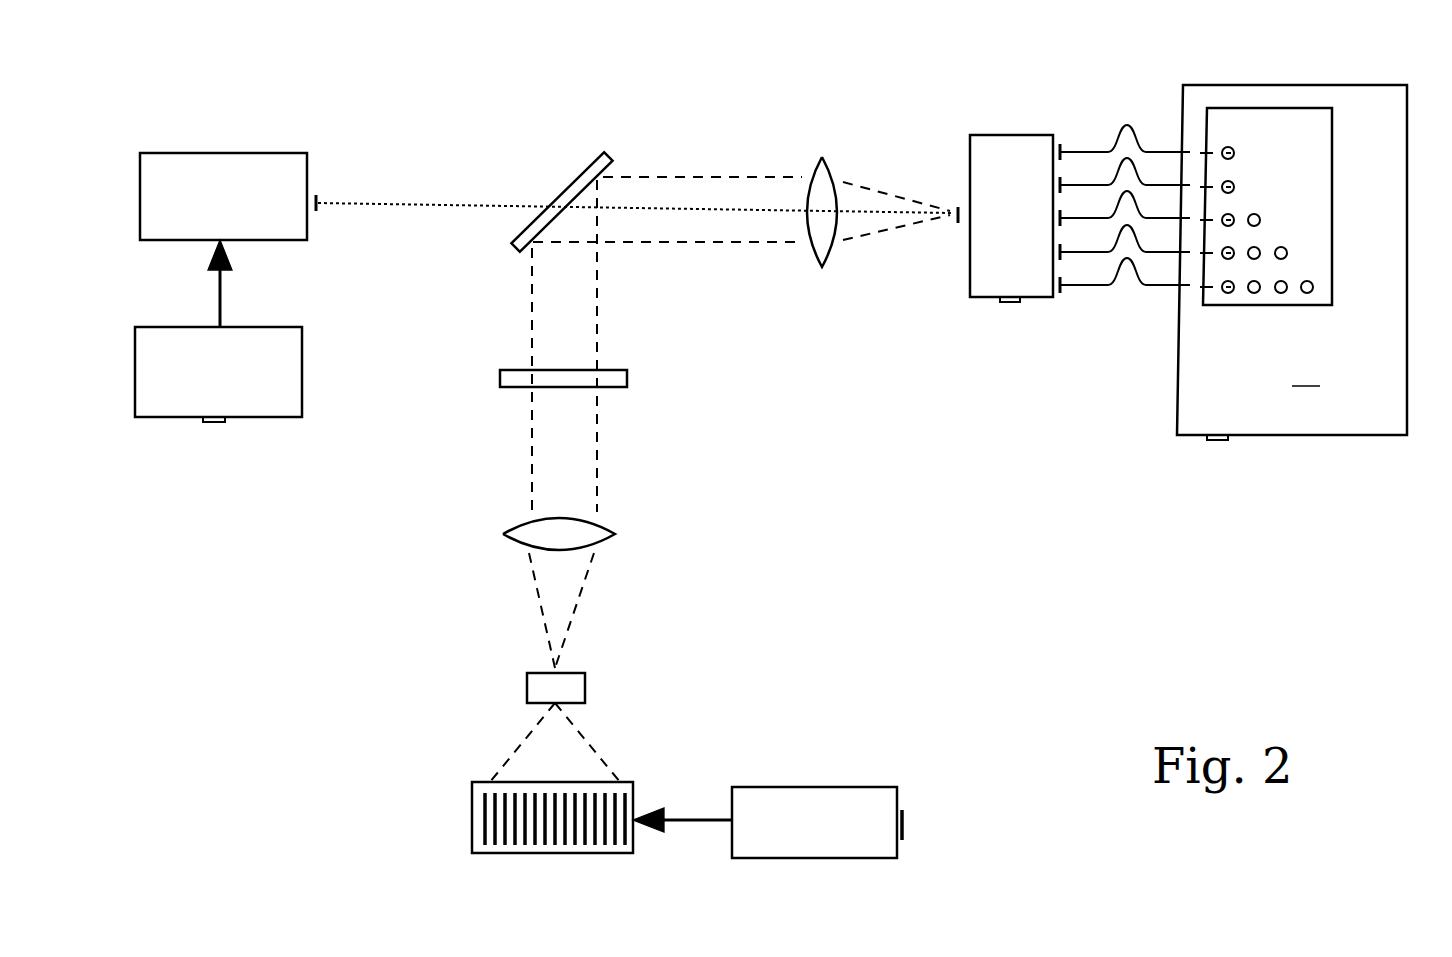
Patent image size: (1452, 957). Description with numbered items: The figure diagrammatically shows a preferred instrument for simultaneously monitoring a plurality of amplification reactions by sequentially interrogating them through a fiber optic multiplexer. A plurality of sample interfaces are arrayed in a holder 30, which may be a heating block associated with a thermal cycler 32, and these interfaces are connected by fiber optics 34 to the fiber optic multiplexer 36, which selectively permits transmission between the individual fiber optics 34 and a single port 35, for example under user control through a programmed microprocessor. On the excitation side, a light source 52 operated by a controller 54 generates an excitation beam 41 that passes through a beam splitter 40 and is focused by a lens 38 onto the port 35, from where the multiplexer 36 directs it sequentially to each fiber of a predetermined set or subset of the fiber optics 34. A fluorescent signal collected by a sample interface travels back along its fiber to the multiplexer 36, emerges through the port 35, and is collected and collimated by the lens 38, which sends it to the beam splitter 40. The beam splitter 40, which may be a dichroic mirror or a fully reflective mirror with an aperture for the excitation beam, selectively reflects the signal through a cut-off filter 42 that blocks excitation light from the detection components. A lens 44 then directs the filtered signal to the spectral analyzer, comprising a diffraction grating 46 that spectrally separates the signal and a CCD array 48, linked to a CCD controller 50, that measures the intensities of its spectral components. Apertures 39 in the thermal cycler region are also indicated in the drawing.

The holder 30 is at (1223, 305).
The thermal cycler 32 is at (1292, 262).
The fiber optics 34 is at (1095, 118).
The port 35 is at (958, 224).
The fiber optic multiplexer 36 is at (970, 148).
The lens 38 is at (822, 267).
The apertures 39 is at (1290, 181).
The beam splitter 40 is at (590, 152).
The excitation beam 41 is at (410, 203).
The cut-off filter 42 is at (627, 380).
The lens 44 is at (615, 534).
The diffraction grating 46 is at (585, 688).
The CCD array 48 is at (472, 817).
The CCD controller 50 is at (878, 787).
The light source 52 is at (188, 152).
The controller 54 is at (302, 385).